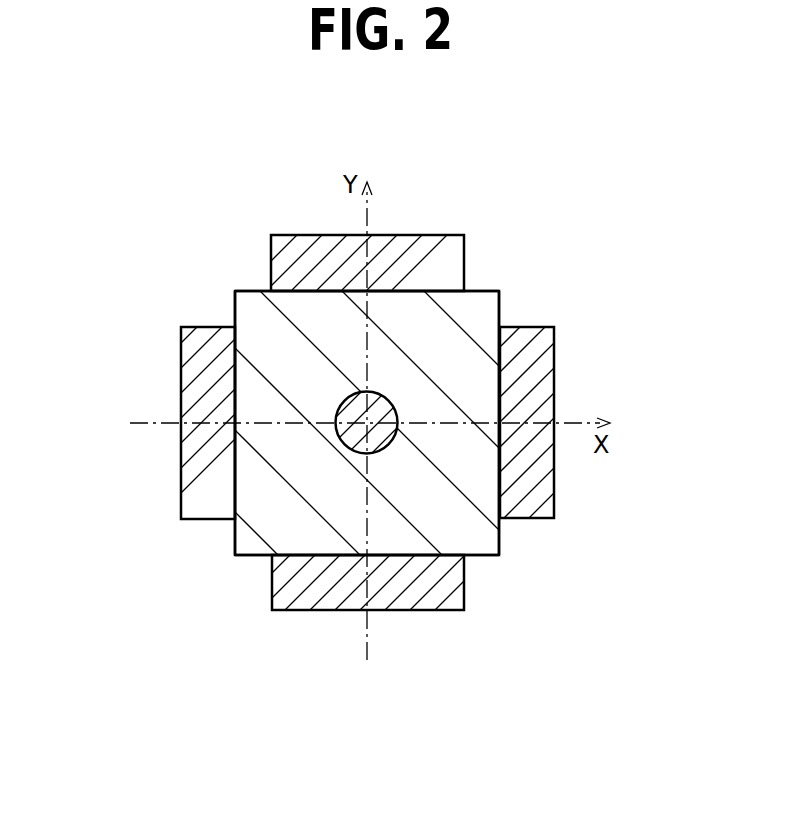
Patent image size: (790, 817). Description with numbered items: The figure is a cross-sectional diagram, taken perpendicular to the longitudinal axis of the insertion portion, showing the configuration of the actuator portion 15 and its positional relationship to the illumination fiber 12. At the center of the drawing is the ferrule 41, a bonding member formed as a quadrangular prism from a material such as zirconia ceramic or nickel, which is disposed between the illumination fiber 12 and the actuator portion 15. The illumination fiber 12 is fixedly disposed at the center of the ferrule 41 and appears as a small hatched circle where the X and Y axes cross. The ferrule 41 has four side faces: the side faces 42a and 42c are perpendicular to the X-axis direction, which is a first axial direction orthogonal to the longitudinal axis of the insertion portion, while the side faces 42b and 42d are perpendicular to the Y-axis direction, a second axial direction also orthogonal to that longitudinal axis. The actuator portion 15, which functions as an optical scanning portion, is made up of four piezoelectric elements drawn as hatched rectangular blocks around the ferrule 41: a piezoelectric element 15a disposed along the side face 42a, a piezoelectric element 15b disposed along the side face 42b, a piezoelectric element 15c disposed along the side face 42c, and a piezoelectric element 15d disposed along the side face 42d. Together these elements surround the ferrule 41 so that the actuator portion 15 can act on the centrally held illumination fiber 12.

The illumination fiber 12 is at (387, 392).
The actuator portion 15 is at (659, 158).
The piezoelectric element 15a is at (557, 352).
The piezoelectric element 15b is at (445, 235).
The piezoelectric element 15c is at (182, 493).
The piezoelectric element 15d is at (290, 612).
The ferrule 41 is at (477, 307).
The side face 42a is at (500, 537).
The side face 42b is at (253, 290).
The side face 42c is at (235, 305).
The side face 42d is at (482, 556).